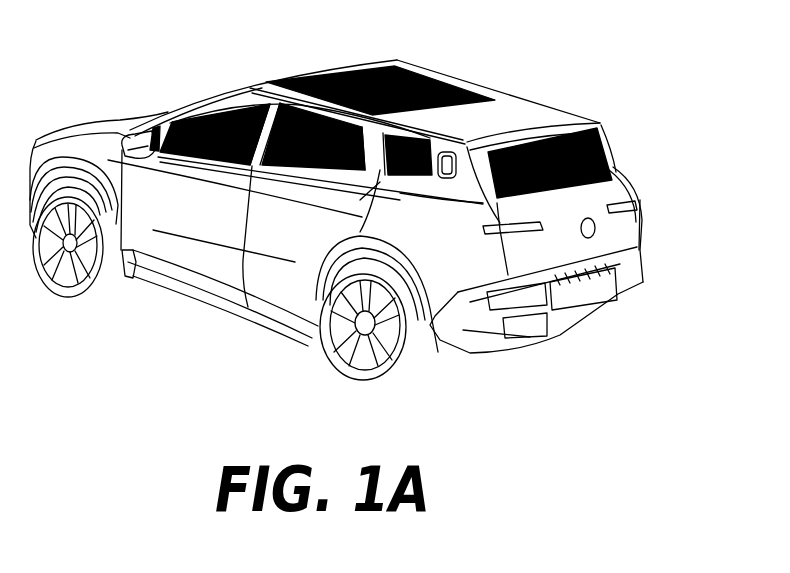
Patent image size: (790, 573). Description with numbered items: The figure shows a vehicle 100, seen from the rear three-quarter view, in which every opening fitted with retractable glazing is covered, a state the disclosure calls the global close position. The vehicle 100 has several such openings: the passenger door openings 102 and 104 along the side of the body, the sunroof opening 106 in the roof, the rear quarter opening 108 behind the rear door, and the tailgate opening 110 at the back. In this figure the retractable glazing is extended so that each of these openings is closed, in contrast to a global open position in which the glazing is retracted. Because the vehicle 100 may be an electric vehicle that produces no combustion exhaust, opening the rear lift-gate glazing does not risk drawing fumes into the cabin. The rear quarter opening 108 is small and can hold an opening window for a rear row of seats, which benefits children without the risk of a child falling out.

The vehicle 100 is at (643, 203).
The passenger door opening 102 is at (200, 122).
The passenger door opening 104 is at (282, 108).
The sunroof opening 106 is at (400, 80).
The rear quarter opening 108 is at (400, 170).
The tailgate opening 110 is at (600, 143).